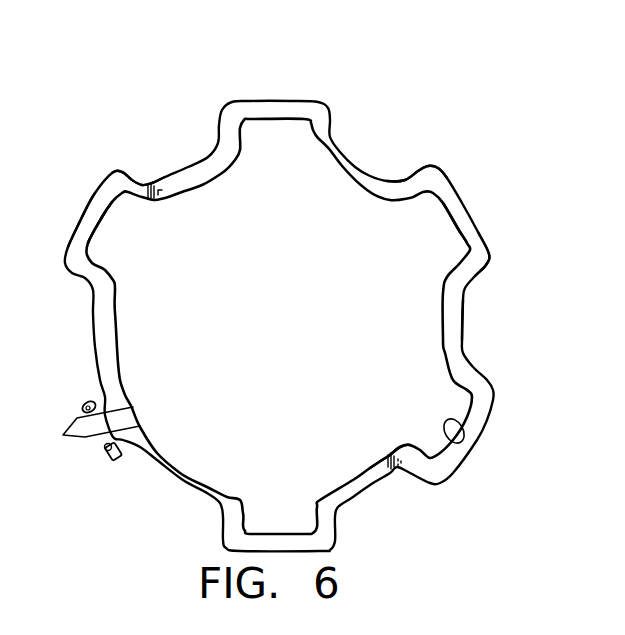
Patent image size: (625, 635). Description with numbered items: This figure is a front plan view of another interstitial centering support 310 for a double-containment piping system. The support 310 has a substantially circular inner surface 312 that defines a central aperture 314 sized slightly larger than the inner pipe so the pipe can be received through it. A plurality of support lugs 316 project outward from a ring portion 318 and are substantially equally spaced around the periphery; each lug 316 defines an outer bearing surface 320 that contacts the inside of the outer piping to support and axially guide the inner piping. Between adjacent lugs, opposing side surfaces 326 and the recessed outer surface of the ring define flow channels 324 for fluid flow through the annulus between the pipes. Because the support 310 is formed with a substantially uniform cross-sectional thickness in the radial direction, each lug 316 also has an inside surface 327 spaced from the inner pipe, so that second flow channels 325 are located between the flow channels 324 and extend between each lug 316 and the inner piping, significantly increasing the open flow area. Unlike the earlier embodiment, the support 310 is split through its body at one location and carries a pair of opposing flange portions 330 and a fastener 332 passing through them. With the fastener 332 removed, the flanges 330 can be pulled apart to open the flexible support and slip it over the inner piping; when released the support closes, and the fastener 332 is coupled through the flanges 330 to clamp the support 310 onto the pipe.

The centering support 310 is at (390, 128).
The inner surface 312 is at (368, 463).
The central aperture 314 is at (147, 295).
The support lug 316 is at (293, 108).
The ring portion 318 is at (189, 168).
The bearing surface 320 is at (262, 101).
The flow channel 324 is at (472, 305).
The second flow channel 325 is at (440, 227).
The side surface 326 is at (427, 141).
The inside surface of lug 327 is at (466, 441).
The flange portion 330 is at (97, 448).
The fastener 332 is at (88, 403).